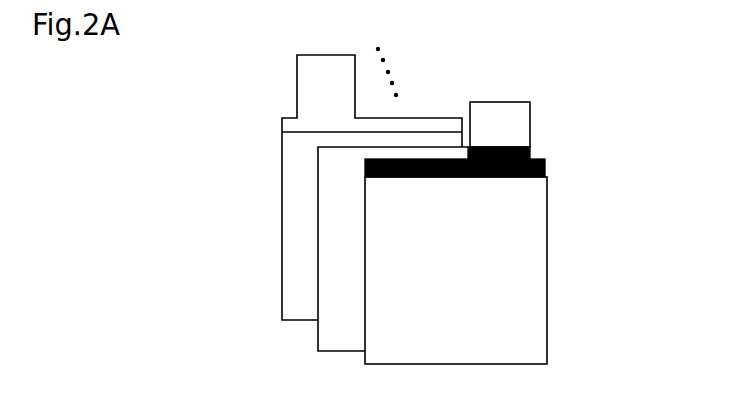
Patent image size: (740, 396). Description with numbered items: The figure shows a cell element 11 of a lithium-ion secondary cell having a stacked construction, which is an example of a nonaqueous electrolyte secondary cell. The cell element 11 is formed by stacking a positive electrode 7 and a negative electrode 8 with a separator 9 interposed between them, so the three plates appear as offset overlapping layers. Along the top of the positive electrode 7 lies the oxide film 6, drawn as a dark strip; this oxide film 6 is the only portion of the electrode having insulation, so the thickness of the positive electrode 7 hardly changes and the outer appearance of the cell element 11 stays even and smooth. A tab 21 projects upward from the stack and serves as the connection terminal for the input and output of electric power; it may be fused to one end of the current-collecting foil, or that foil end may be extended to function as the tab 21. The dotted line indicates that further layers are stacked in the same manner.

The oxide film 6 is at (546, 168).
The positive electrode 7 is at (529, 270).
The negative electrode 8 is at (294, 222).
The separator 9 is at (343, 290).
The cell element 11 is at (572, 152).
The tab 21 is at (518, 122).